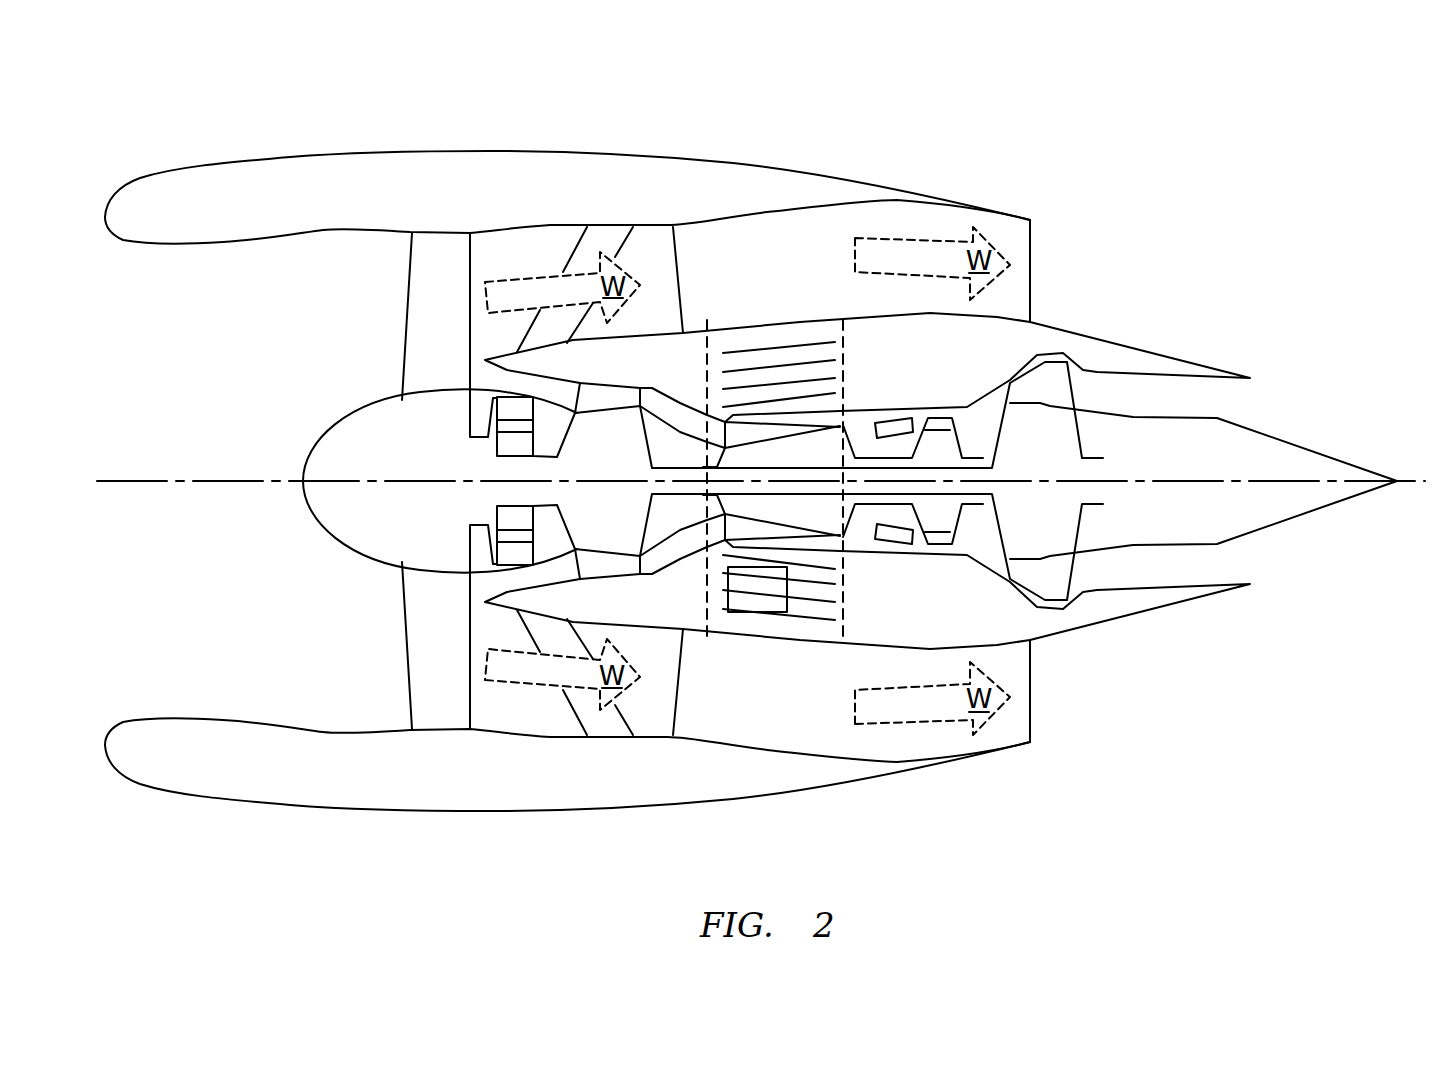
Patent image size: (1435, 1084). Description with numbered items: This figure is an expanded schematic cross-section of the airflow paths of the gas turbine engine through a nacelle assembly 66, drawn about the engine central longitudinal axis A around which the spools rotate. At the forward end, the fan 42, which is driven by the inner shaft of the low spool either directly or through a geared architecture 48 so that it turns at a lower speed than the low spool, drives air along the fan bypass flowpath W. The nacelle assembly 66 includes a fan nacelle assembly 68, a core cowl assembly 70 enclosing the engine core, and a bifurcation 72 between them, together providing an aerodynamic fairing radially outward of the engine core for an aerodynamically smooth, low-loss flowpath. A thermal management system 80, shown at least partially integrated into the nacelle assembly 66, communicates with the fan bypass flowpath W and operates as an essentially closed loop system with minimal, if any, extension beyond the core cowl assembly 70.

The fan 42 is at (404, 650).
The geared architecture 48 is at (497, 515).
The nacelle assembly 66 is at (317, 153).
The fan nacelle assembly 68 is at (575, 177).
The core cowl assembly 70 is at (756, 637).
The bifurcation 72 is at (810, 728).
The thermal management system 80 is at (743, 602).
The engine central longitudinal axis A is at (1423, 483).